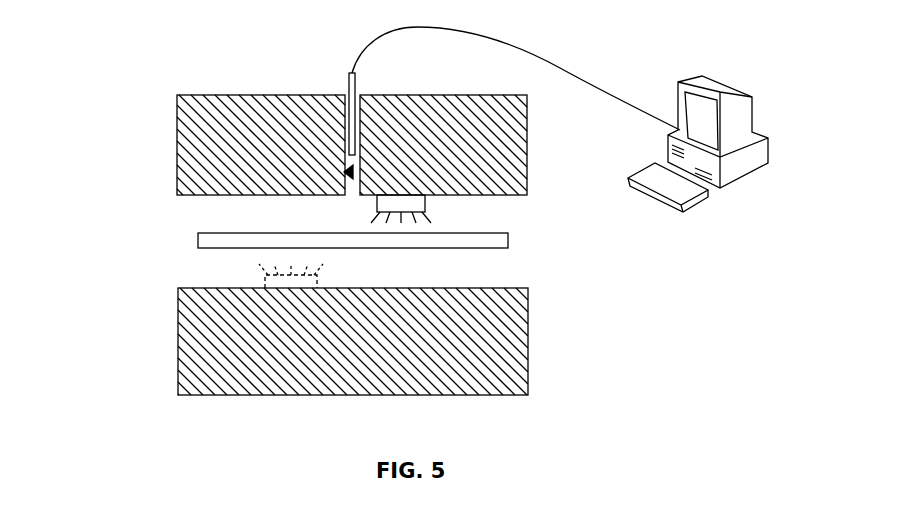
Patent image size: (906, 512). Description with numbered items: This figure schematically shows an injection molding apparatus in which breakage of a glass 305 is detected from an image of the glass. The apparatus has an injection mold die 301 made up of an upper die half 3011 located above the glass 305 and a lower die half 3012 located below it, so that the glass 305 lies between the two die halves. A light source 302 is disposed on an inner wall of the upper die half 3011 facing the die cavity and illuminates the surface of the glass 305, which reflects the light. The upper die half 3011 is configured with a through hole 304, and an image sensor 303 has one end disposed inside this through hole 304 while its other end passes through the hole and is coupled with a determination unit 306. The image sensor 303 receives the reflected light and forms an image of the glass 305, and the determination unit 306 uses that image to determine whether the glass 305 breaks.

The injection mold die 301 is at (102, 139).
The upper die half 3011 is at (222, 135).
The lower die half 3012 is at (220, 347).
The light source 302 is at (415, 205).
The image sensor 303 is at (349, 93).
The through hole 304 is at (345, 170).
The glass 305 is at (468, 242).
The determination unit 306 is at (692, 118).